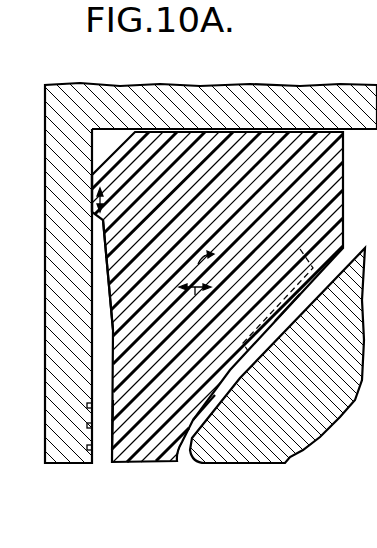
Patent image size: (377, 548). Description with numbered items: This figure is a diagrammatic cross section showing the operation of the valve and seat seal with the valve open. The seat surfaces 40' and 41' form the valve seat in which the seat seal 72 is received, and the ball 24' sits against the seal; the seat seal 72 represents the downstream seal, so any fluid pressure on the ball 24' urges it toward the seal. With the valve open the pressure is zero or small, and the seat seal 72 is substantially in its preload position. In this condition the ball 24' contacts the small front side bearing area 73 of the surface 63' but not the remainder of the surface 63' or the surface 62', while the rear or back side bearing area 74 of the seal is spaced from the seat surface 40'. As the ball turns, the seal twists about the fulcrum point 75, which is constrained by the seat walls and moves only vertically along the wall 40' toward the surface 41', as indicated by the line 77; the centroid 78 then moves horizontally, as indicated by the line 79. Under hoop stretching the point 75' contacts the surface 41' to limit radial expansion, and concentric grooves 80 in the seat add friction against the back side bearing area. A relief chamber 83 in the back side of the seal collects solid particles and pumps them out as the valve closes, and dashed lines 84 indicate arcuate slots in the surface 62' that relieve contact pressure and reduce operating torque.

The seat surface 41' is at (211, 91).
The seat surface 40' is at (52, 296).
The point 75' is at (217, 91).
The fulcrum point 75 is at (54, 197).
The seat seal 72 is at (234, 226).
The ball 24' is at (277, 355).
The relief chamber 83 is at (100, 248).
The line 77 is at (104, 204).
The centroid 78 is at (199, 268).
The line 79 is at (195, 300).
The slots 84 is at (278, 291).
The surface 62' is at (273, 300).
The surface 63' is at (196, 392).
The rear or back side bearing area 74 is at (117, 425).
The front side bearing area 73 is at (178, 456).
The grooves 80 is at (87, 447).